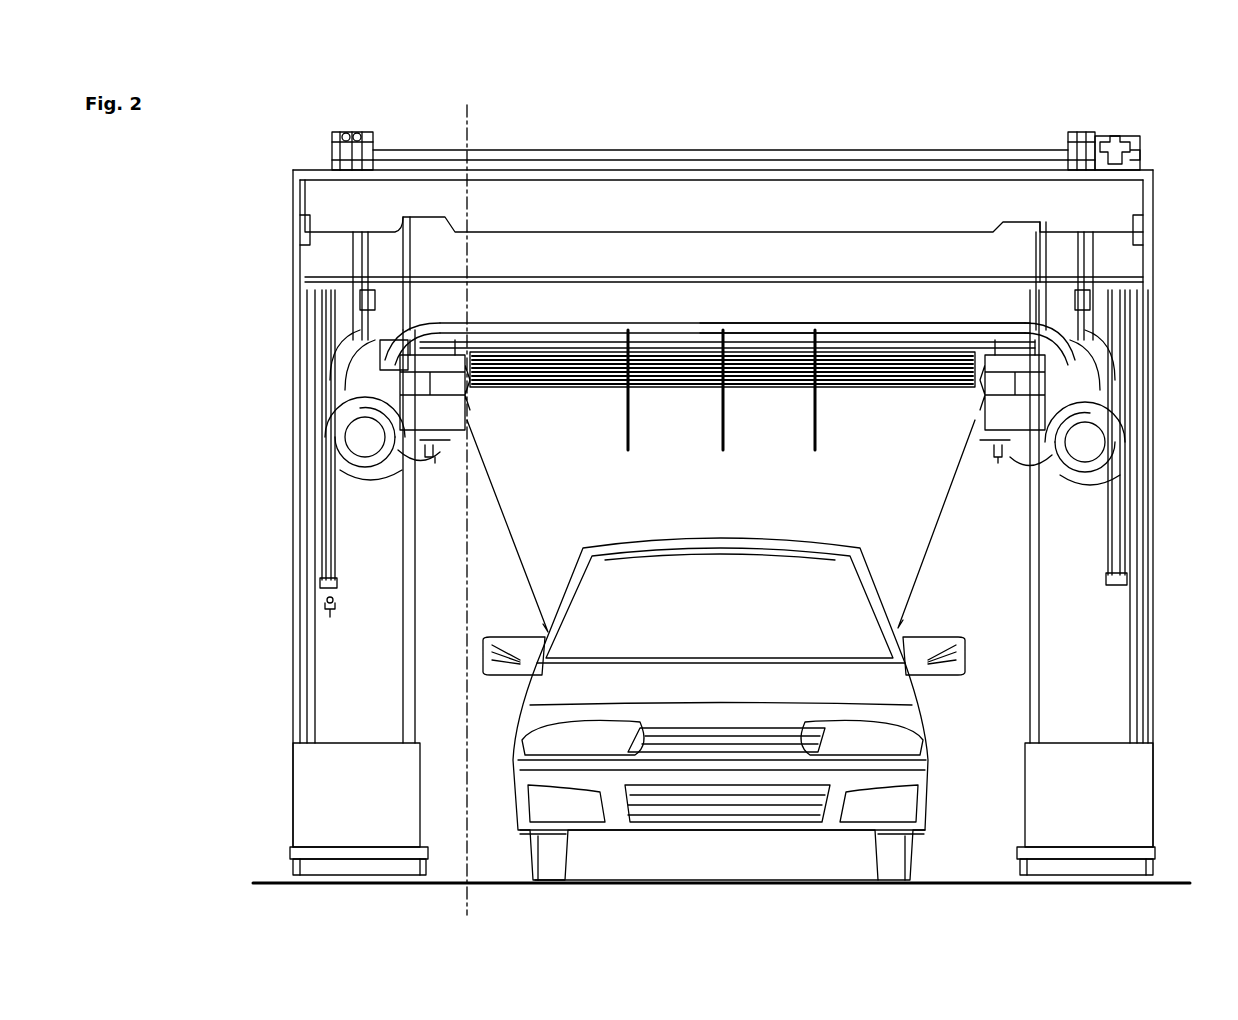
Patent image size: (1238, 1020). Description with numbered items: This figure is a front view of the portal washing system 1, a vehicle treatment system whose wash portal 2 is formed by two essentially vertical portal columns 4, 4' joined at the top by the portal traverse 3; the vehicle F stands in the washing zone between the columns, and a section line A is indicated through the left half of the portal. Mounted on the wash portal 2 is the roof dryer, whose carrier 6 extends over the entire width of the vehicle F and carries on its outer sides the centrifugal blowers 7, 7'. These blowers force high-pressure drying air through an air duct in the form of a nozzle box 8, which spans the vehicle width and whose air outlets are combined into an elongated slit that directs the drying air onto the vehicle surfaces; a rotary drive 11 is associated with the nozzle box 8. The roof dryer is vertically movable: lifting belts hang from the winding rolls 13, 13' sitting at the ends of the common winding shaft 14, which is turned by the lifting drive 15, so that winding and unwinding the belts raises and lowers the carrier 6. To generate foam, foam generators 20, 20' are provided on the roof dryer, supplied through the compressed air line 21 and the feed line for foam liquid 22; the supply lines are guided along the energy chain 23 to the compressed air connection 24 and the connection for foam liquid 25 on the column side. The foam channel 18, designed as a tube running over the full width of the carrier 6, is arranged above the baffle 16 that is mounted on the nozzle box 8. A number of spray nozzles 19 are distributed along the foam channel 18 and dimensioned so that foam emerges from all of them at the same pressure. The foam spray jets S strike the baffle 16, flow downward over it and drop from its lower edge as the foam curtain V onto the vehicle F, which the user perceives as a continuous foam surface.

The portal washing system 1 is at (1155, 150).
The wash portal 2 is at (288, 183).
The portal traverse 3 is at (312, 170).
The portal column 4 is at (328, 582).
The portal column 4' is at (1110, 582).
The carrier 6 is at (425, 320).
The centrifugal blower 7 is at (334, 441).
The centrifugal blower 7' is at (1107, 442).
The nozzle box 8 is at (450, 412).
The rotary drive 11 is at (983, 470).
The winding roll for lifting belt 13 is at (376, 128).
The winding roll for lifting belt 13' is at (1056, 130).
The winding shaft 14 is at (637, 150).
The lifting drive 15 is at (1105, 136).
The baffle 16 is at (467, 430).
The foam channel 18 is at (518, 348).
The spray nozzle 19 is at (553, 348).
The foam generator 20 is at (315, 405).
The foam generator 20' is at (1131, 407).
The compressed air line 21 is at (848, 323).
The feed line for foam liquid 22 is at (762, 342).
The energy chain 23 is at (330, 512).
The compressed air connection 24 is at (325, 606).
The connection for foam liquid 25 is at (322, 598).
The foam spray jets S is at (857, 390).
The foam curtain V is at (910, 540).
The vehicle F is at (905, 723).
The section line A- A is at (479, 511).